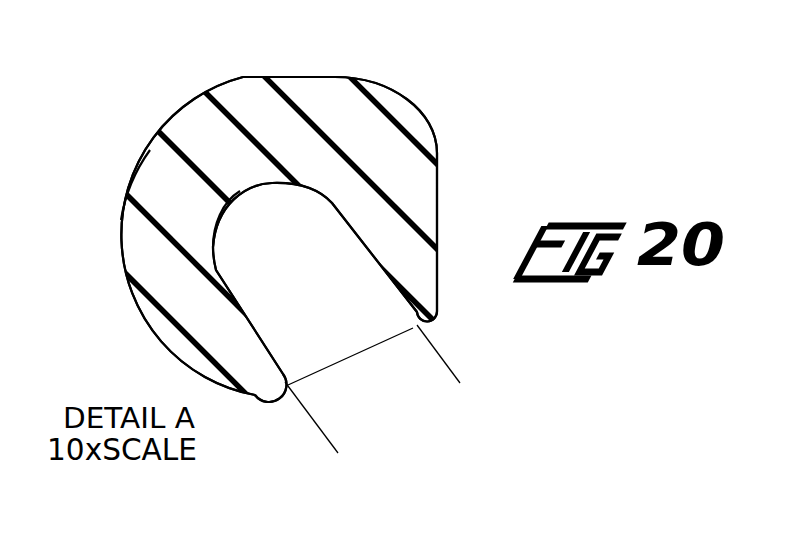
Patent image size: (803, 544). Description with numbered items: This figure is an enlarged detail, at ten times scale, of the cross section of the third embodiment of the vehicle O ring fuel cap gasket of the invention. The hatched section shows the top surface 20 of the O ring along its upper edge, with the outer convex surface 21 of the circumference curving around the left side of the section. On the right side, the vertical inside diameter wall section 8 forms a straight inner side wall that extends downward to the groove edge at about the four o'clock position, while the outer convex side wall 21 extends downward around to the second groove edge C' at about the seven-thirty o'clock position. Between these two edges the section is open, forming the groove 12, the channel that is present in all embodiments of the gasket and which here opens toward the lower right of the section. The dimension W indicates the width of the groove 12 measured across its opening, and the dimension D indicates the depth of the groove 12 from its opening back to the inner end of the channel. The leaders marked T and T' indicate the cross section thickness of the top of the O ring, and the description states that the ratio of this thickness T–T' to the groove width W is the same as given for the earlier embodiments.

The top surface 20 is at (309, 76).
The vertical inside diameter wall section 8 is at (438, 193).
The outer convex surface of circumference 21 is at (119, 238).
The groove or channel 12 is at (282, 300).
The cross section thickness T is at (245, 224).
The cross section thickness T' is at (105, 180).
The second groove edge C' is at (262, 406).
The depth of groove D is at (272, 184).
The width of groove W is at (448, 367).